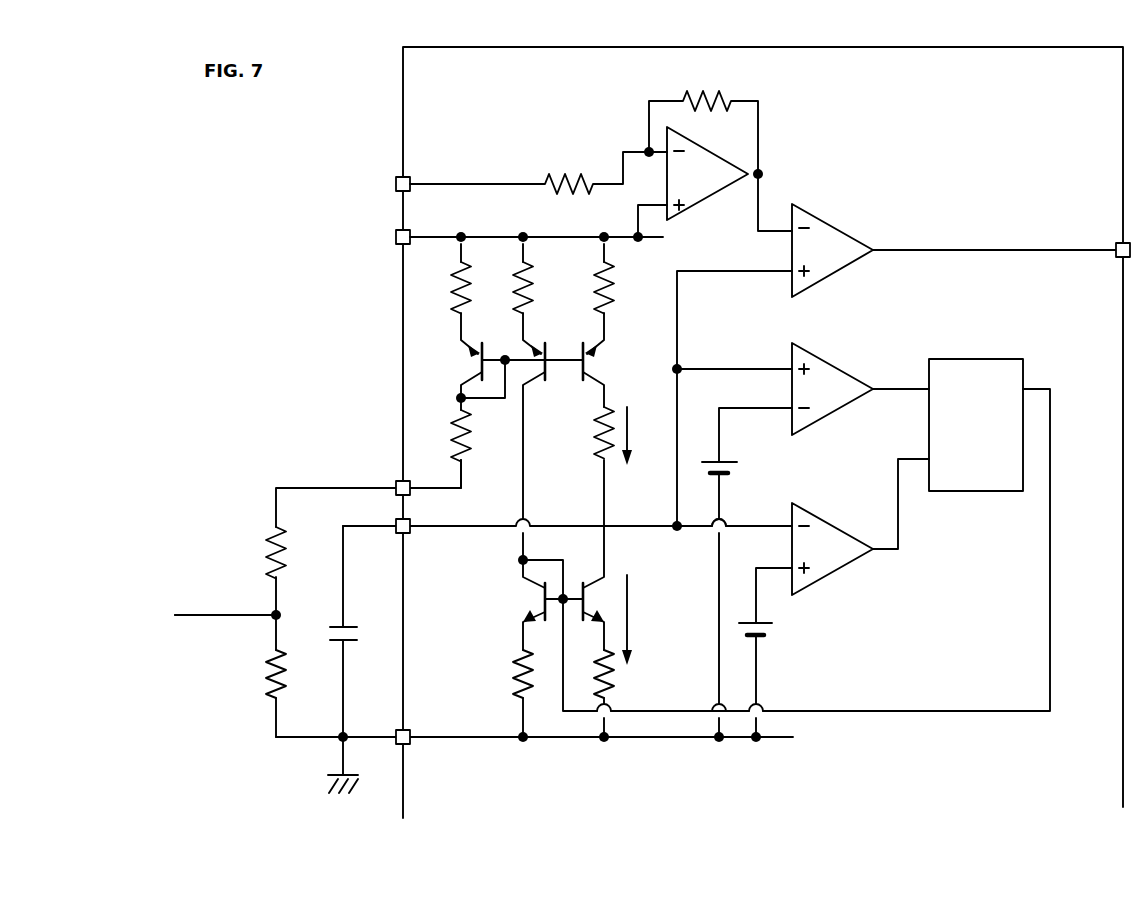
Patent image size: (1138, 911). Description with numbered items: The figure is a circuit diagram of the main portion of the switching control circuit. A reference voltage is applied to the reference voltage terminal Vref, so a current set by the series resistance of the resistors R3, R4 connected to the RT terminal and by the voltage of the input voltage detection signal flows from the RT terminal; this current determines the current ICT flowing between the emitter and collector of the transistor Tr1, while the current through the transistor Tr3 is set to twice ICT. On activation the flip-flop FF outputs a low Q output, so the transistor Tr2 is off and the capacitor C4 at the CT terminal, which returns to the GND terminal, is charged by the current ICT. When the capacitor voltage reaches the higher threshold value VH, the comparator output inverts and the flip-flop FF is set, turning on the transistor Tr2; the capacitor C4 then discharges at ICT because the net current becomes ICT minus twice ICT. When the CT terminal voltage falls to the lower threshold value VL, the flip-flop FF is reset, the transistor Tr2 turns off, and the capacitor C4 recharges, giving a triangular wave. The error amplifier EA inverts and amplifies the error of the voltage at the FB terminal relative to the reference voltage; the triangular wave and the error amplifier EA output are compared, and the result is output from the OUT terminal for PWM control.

The FB terminal FB is at (579, 142).
The reference voltage terminal Vref is at (531, 224).
The RT terminal RT is at (416, 479).
The CT terminal CT is at (417, 517).
The GND terminal GND is at (425, 727).
The OUT terminal OUT is at (1101, 240).
The error amplifier EA is at (768, 136).
The flip-flop FF is at (1024, 359).
The higher voltage threshold value VH is at (747, 572).
The lower voltage threshold value VL is at (771, 652).
The transistor Tr1 is at (611, 361).
The transistor Tr2 is at (513, 602).
The transistor Tr3 is at (586, 584).
The current ICT is at (642, 436).
The resistor R4 is at (292, 553).
The resistor R3 is at (292, 674).
The capacitor C4 is at (360, 588).